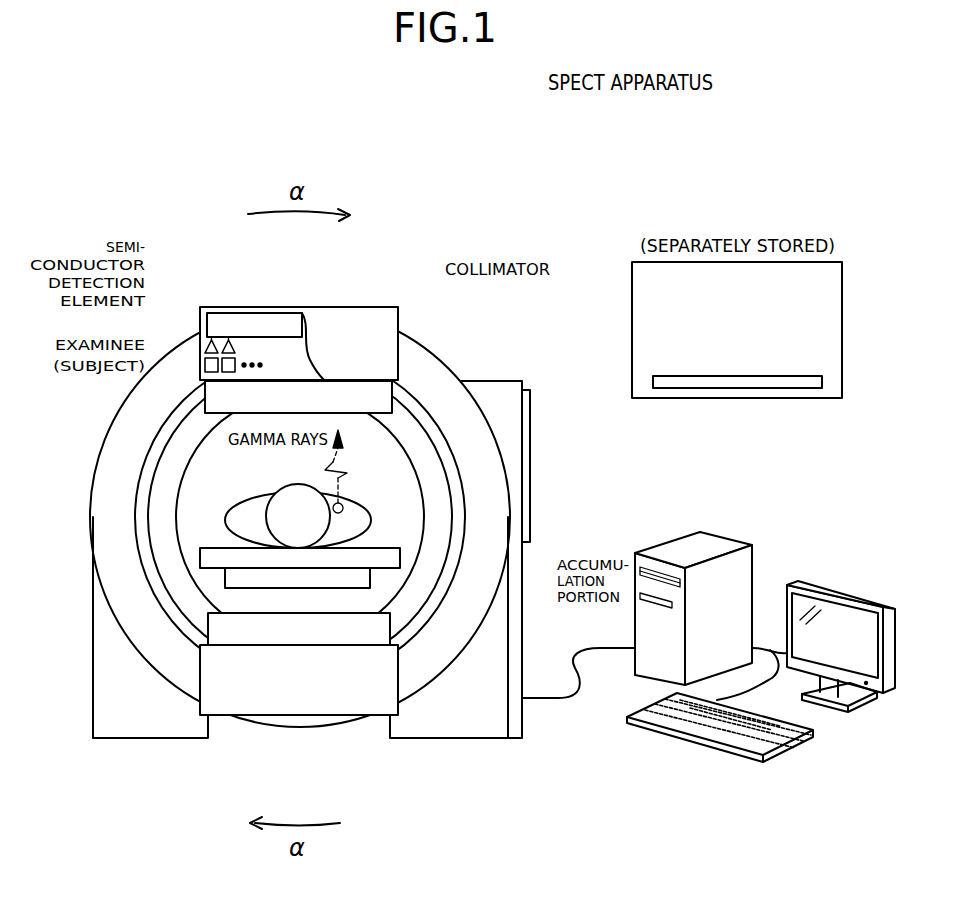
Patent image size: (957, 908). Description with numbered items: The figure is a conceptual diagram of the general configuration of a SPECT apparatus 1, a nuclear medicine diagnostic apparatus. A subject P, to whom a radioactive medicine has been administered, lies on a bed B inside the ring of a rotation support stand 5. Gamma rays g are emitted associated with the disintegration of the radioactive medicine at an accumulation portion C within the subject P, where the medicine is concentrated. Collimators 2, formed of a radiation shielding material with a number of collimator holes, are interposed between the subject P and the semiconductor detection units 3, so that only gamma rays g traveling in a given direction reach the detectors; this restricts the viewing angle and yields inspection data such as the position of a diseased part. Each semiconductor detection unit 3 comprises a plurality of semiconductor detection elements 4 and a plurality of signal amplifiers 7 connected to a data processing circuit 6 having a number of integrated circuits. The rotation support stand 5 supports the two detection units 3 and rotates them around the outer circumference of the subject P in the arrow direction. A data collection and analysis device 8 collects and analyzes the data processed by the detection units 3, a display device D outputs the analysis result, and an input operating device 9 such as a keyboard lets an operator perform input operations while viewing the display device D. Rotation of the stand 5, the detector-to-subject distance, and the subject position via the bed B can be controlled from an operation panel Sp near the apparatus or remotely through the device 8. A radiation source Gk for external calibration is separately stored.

The SPECT apparatus 1 is at (517, 147).
The collimator 2 is at (375, 393).
The semiconductor detection unit 3 is at (360, 307).
The semiconductor detection element 4 is at (205, 363).
The rotation support stand 5 is at (438, 375).
The data processing circuit 6 is at (252, 326).
The signal amplifier 7 is at (209, 345).
The data collection and analysis device 8 is at (723, 532).
The input operating device 9 is at (800, 747).
The subject P is at (237, 500).
The bed B is at (206, 557).
The accumulation portion C is at (343, 511).
The gamma rays g is at (325, 470).
The display device D is at (843, 592).
The operation panel Sp is at (530, 420).
The radiation source Gk is at (762, 376).